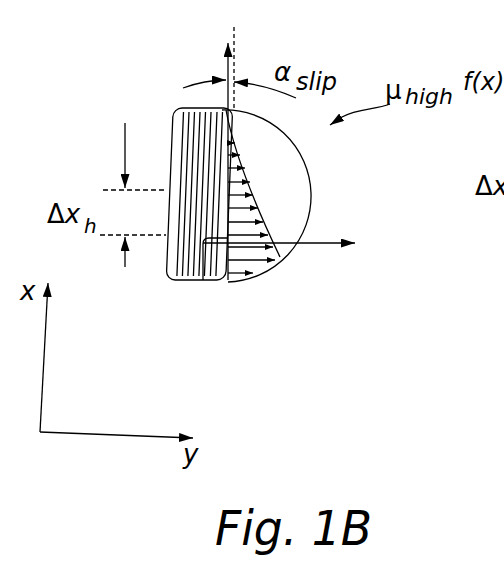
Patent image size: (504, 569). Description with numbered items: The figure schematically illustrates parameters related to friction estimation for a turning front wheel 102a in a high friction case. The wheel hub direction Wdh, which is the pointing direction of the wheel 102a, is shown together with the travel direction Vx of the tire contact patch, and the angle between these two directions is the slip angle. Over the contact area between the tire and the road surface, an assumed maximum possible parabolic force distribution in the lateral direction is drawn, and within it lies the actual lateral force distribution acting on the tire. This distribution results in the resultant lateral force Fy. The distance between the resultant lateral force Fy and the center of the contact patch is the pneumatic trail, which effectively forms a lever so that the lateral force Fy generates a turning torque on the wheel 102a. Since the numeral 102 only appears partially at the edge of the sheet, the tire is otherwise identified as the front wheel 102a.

The front wheel 102a is at (173, 152).
The tire (partially visible label) 102 is at (363, 196).
The travel direction Vx is at (209, 161).
The wheel hub direction Wdh is at (251, 55).
The resultant lateral force Fy is at (279, 272).